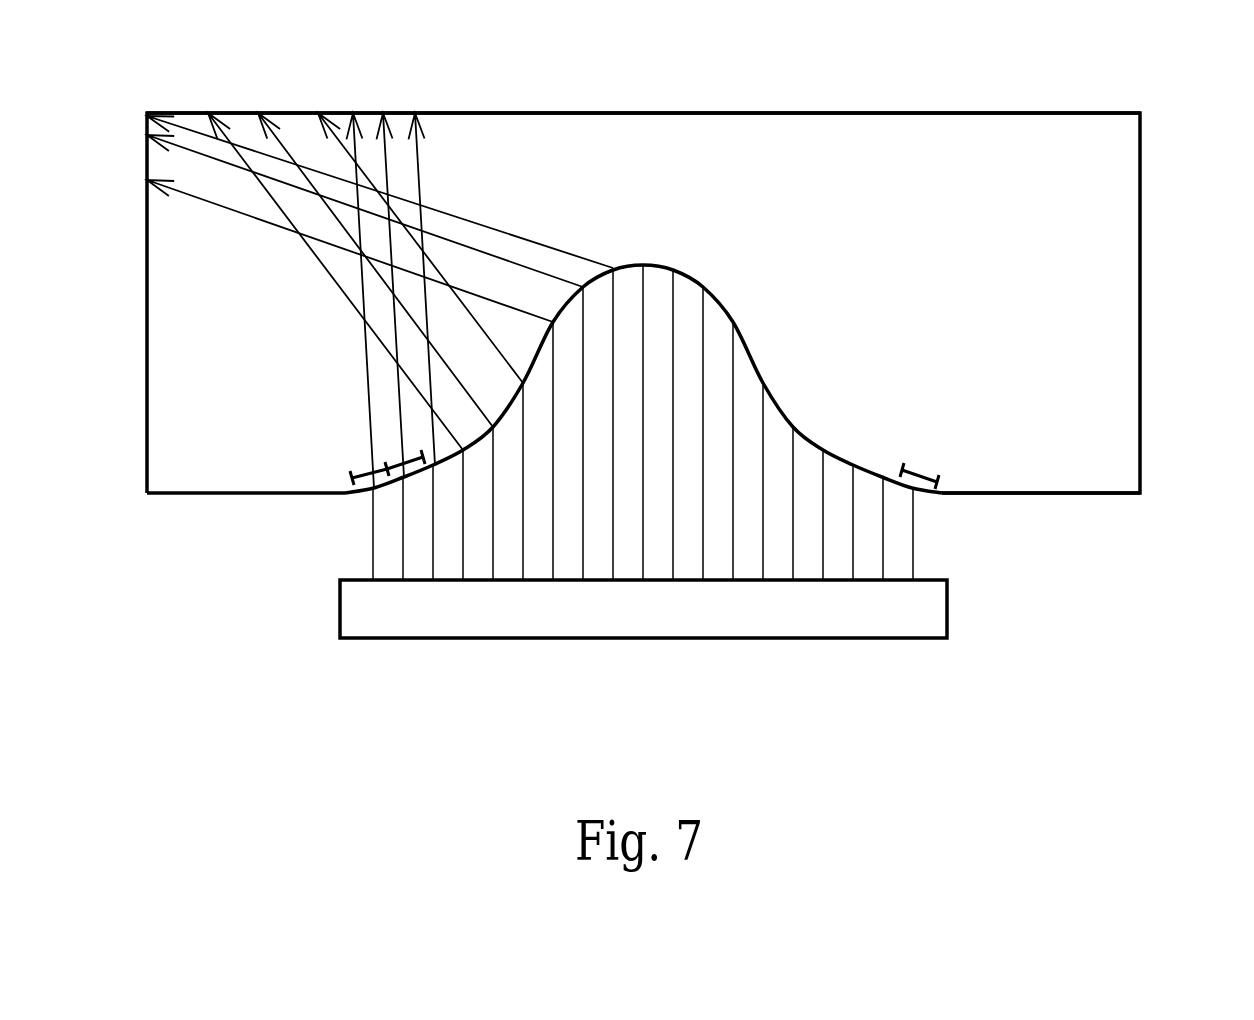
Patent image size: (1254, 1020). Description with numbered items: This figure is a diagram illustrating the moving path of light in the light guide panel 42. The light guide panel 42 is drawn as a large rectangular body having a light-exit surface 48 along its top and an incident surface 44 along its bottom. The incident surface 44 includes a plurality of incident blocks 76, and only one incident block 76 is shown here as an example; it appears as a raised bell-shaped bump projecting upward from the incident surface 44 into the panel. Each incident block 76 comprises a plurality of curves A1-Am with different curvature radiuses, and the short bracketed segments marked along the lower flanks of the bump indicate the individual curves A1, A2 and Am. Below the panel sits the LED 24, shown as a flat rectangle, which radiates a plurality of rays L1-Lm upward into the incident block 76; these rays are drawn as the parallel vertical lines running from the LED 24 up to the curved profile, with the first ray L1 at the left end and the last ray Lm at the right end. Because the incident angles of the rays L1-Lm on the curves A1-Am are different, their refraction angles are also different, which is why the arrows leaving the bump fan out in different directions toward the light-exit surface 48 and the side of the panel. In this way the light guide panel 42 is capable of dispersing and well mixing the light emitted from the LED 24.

The light guide panel 42 is at (698, 273).
The light-exit surface 48 is at (985, 112).
The incident surface 44 is at (1086, 492).
The incident block 76 is at (832, 452).
The LED 24 is at (950, 612).
The curve A1 is at (363, 462).
The curve A2 is at (409, 448).
The curve Am is at (930, 467).
The ray L1 is at (373, 544).
The ray Lm is at (914, 544).